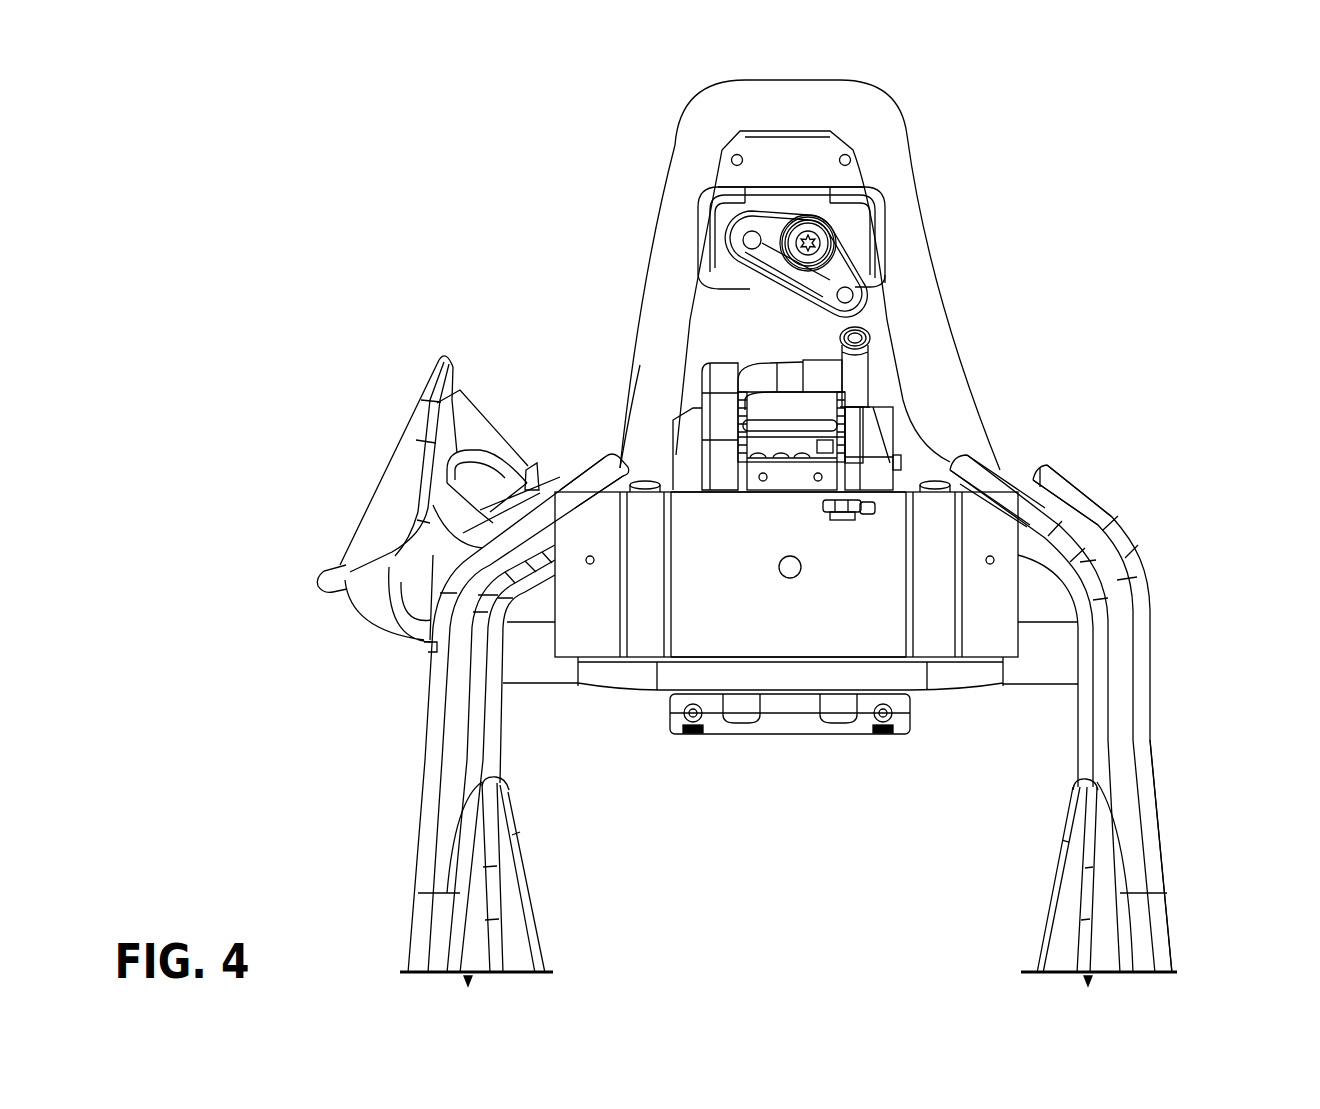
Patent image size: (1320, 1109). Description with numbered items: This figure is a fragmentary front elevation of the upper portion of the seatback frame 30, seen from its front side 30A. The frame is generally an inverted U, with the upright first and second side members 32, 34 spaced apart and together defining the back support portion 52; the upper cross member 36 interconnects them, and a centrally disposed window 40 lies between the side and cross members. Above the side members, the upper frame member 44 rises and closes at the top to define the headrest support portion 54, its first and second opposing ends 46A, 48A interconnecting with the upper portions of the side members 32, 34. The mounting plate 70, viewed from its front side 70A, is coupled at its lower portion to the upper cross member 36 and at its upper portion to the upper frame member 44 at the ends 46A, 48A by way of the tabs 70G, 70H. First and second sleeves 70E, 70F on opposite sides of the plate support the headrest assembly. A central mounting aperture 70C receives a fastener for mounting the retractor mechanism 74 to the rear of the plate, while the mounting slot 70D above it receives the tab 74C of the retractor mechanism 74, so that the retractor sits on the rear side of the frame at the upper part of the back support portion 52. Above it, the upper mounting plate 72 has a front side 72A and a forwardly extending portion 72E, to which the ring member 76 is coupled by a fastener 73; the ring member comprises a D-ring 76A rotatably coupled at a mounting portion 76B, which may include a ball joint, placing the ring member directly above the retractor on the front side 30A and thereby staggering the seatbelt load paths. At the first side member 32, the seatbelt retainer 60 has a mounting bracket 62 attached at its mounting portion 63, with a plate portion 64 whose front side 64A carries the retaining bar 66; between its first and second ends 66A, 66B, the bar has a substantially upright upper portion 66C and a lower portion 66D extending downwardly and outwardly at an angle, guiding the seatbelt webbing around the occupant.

The seatback frame 30 is at (1082, 461).
The front side 30A is at (772, 118).
The first side member 32 is at (408, 790).
The second side member 34 is at (1190, 936).
The upper cross member 36 is at (960, 702).
The window 40 is at (748, 905).
The upper frame member 44 is at (908, 130).
The first opposing end 46A is at (602, 445).
The second opposing end 48A is at (1012, 467).
The back support portion 52 is at (1180, 807).
The headrest support portion 54 is at (967, 150).
The seatbelt retainer 60 is at (342, 388).
The mounting bracket 62 is at (308, 516).
The mounting portion 63 is at (534, 465).
The plate portion 64 is at (499, 435).
The front side 64A is at (470, 430).
The retaining bar 66 is at (427, 517).
The first end 66A is at (455, 362).
The second end 66B is at (337, 596).
The upper portion 66C is at (440, 413).
The lower portion 66D is at (343, 573).
The mounting plate 70 is at (1025, 600).
The front side 70A is at (722, 622).
The mounting aperture 70C is at (792, 580).
The mounting slot 70D is at (877, 507).
The first sleeve 70E is at (643, 607).
The second sleeve 70F is at (933, 597).
The tab 70G is at (624, 455).
The tab 70H is at (1128, 580).
The upper mounting plate 72 is at (825, 158).
The front side 72A is at (769, 173).
The forwardly extending portion 72E is at (778, 203).
The fastener 73 is at (830, 247).
The retractor mechanism 74 is at (882, 366).
The tab 74C is at (805, 515).
The ring member 76 is at (870, 302).
The D-ring 76A is at (760, 307).
The mounting portion 76B is at (835, 220).